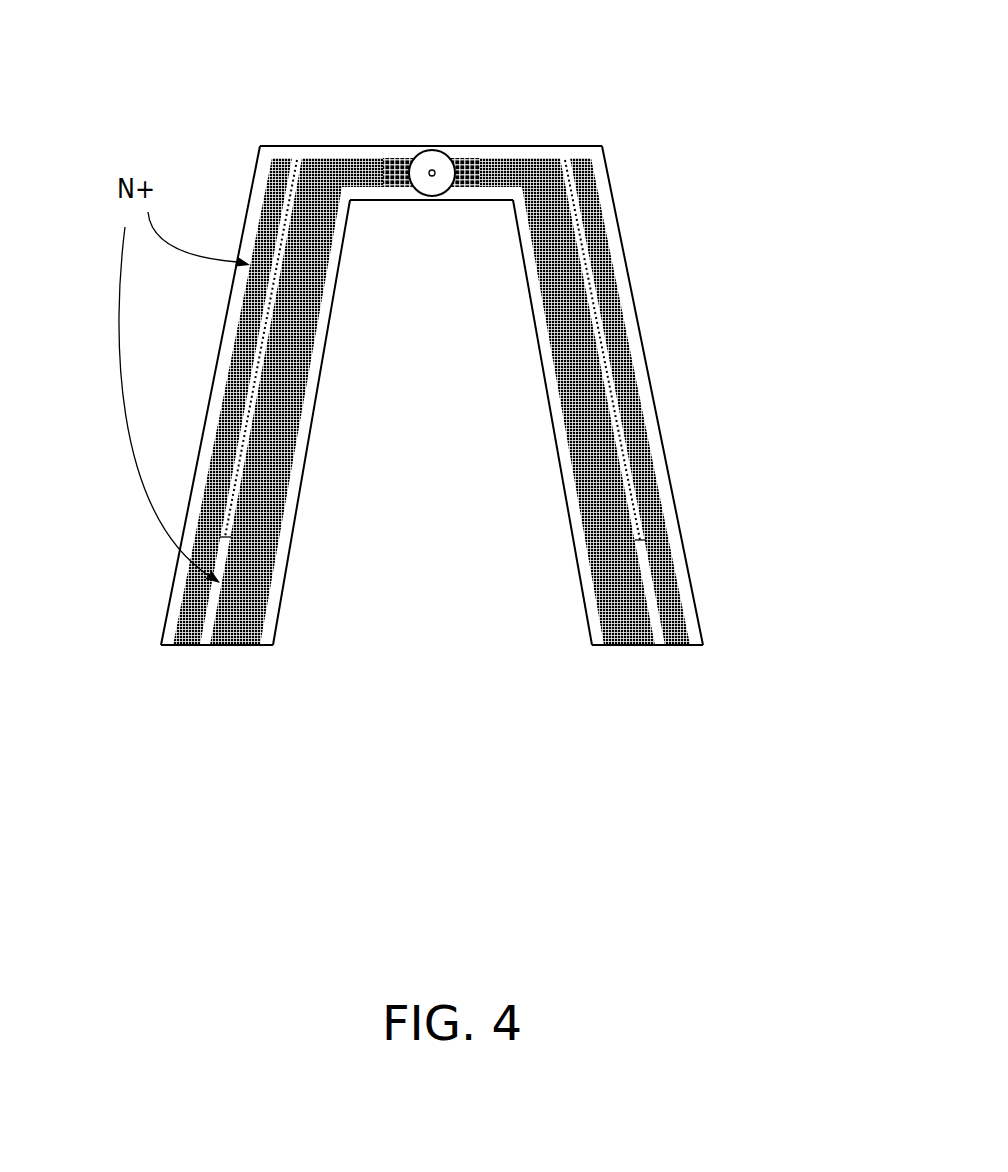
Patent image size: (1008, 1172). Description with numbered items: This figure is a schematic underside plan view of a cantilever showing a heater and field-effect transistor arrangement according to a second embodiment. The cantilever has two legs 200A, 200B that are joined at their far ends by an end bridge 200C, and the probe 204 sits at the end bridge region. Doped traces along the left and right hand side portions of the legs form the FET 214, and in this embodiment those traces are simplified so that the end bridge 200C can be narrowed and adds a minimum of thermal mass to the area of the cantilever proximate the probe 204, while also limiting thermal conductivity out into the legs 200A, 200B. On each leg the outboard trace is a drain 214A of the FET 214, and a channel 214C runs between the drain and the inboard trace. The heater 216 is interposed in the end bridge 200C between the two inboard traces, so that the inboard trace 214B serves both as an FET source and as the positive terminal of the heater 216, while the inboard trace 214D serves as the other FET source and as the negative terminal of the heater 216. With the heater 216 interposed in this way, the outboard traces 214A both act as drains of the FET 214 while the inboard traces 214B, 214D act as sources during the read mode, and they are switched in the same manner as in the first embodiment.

The cantilever leg 200A is at (175, 602).
The cantilever leg 200B is at (685, 575).
The end bridge 200C is at (388, 146).
The probe 204 is at (427, 188).
The FET 214 is at (470, 469).
The drain 214A is at (185, 660).
The source / heater positive terminal 214B is at (247, 660).
The channel 214C is at (288, 217).
The source / heater negative terminal 214D is at (622, 660).
The heater 216 is at (470, 145).